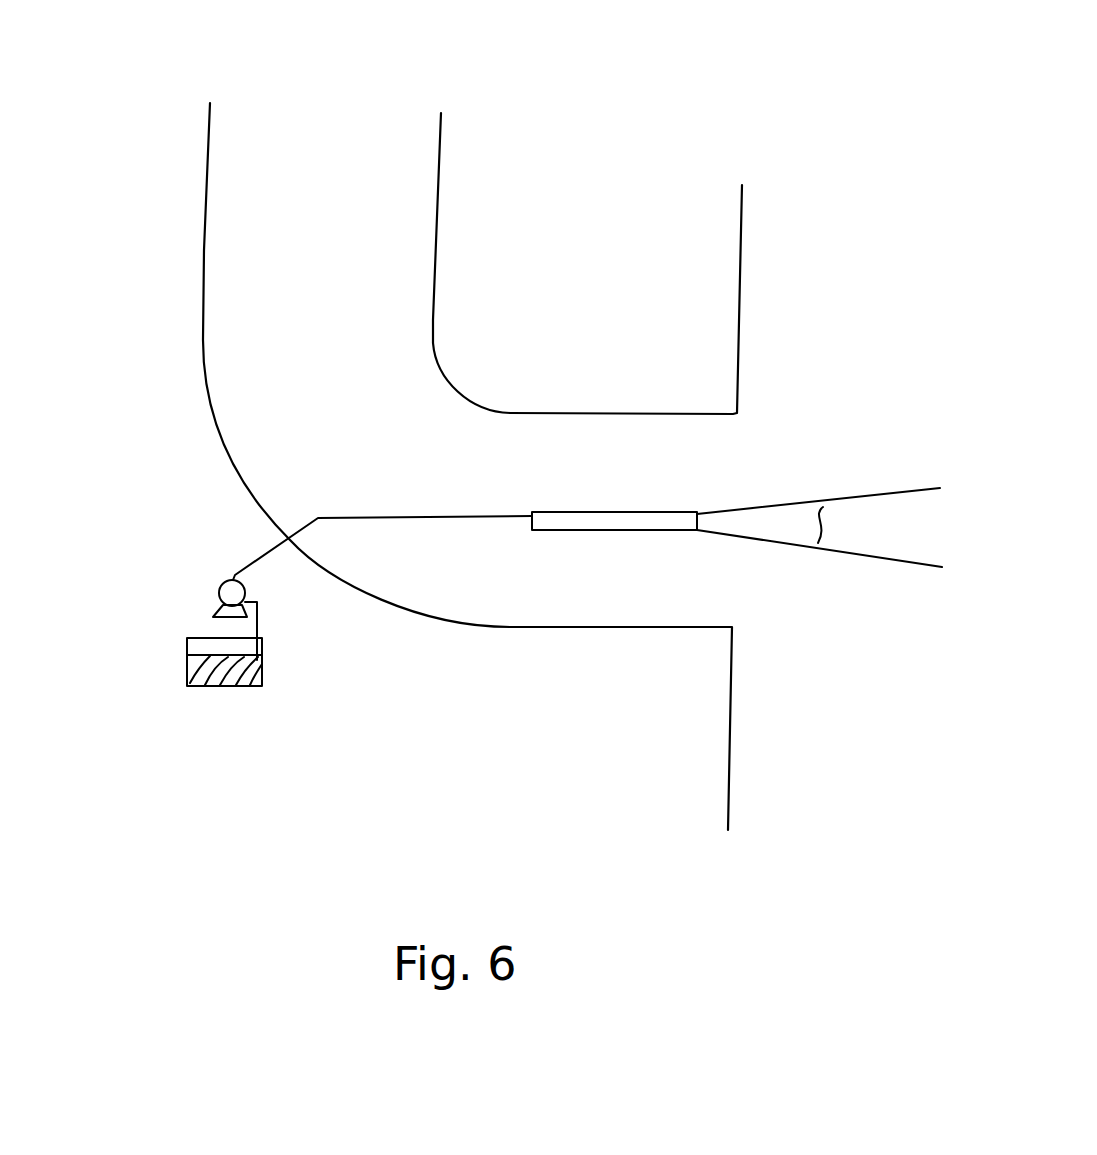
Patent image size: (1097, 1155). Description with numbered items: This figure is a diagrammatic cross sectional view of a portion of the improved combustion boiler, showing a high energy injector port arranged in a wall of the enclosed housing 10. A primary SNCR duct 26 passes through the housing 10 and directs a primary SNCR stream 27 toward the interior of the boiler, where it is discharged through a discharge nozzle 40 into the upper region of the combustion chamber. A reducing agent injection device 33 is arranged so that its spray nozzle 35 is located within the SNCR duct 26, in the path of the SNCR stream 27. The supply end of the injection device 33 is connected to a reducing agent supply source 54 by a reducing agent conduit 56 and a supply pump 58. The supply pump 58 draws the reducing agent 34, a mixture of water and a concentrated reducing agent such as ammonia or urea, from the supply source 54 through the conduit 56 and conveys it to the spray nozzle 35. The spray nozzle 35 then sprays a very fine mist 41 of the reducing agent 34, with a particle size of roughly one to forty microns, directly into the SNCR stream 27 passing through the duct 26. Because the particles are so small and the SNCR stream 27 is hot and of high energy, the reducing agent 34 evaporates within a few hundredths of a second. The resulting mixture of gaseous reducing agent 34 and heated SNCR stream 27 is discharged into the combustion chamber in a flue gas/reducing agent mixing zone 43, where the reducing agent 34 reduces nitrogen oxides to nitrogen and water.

The enclosed housing 10 is at (728, 772).
The primary SNCR duct 26 is at (203, 263).
The primary SNCR stream 27 is at (393, 15).
The reducing agent injection device 33 is at (355, 502).
The reducing agent 34 is at (218, 668).
The spray nozzle 35 is at (603, 520).
The discharge nozzle 40 is at (510, 627).
The very fine mist 41 is at (772, 520).
The flue gas/reducing agent mixing zone 43 is at (897, 547).
The reducing agent supply source 54 is at (260, 665).
The reducing agent conduit 56 is at (265, 557).
The supply pump 58 is at (218, 592).